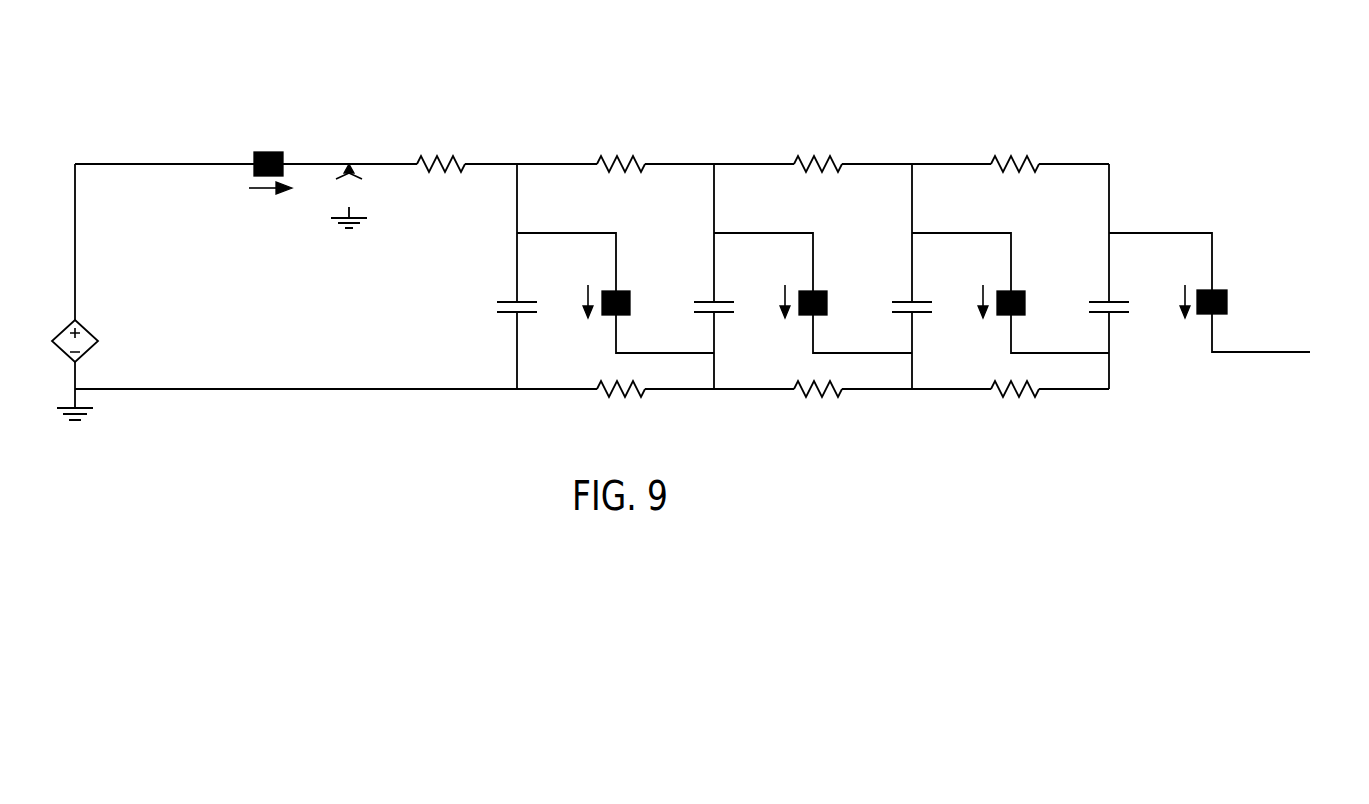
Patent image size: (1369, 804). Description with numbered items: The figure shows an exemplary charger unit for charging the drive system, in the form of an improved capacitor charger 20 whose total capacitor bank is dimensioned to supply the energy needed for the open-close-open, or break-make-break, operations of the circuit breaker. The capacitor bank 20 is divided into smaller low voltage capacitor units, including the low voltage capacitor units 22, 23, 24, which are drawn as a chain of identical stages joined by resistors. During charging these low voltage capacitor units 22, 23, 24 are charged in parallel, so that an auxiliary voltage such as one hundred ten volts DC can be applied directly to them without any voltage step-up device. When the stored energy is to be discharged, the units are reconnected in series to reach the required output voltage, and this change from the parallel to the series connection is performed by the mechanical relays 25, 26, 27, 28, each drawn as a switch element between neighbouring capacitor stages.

The capacitor charger 20 is at (298, 100).
The low voltage capacitor unit 22 is at (700, 302).
The low voltage capacitor unit 23 is at (897, 302).
The low voltage capacitor unit 24 is at (1095, 302).
The mechanical relay 25 is at (630, 303).
The mechanical relay 26 is at (827, 303).
The mechanical relay 27 is at (1025, 303).
The mechanical relay 28 is at (1227, 302).